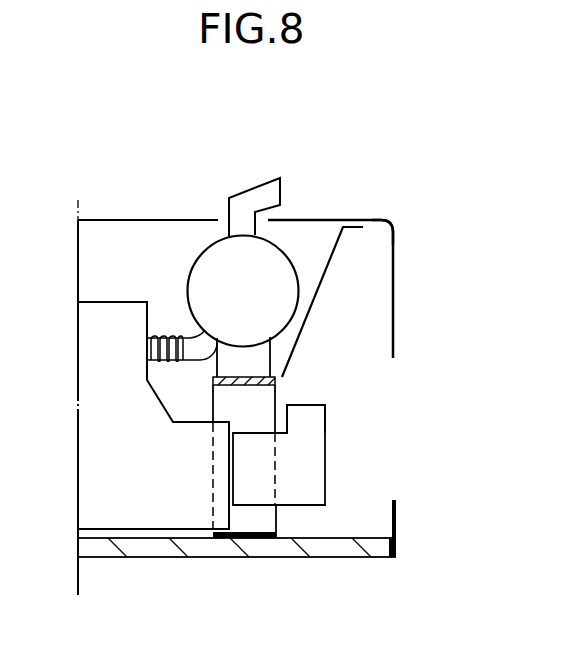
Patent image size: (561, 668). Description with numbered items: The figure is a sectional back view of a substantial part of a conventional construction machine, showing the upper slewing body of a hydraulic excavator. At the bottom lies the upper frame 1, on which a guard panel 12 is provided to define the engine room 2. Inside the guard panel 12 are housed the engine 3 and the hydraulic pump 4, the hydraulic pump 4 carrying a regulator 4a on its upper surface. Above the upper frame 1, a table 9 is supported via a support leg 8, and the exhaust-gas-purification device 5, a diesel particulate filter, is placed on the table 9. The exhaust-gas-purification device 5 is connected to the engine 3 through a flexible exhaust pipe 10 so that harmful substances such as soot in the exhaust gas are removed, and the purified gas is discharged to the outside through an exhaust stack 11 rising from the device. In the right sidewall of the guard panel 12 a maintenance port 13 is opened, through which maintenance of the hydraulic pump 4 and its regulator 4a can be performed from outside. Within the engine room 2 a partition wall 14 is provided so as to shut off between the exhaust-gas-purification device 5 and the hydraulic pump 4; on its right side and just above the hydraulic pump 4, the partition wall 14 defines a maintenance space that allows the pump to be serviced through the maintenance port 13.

The upper frame 1 is at (276, 557).
The engine room 2 is at (377, 309).
The engine 3 is at (92, 331).
The hydraulic pump 4 is at (328, 482).
The regulator 4a is at (315, 405).
The exhaust-gas-purification device 5 is at (208, 246).
The support leg 8 is at (212, 407).
The table 9 is at (258, 374).
The flexible exhaust pipe 10 is at (163, 335).
The exhaust stack 11 is at (255, 186).
The guard panel 12 is at (375, 220).
The maintenance port 13 is at (395, 433).
The partition wall 14 is at (327, 265).